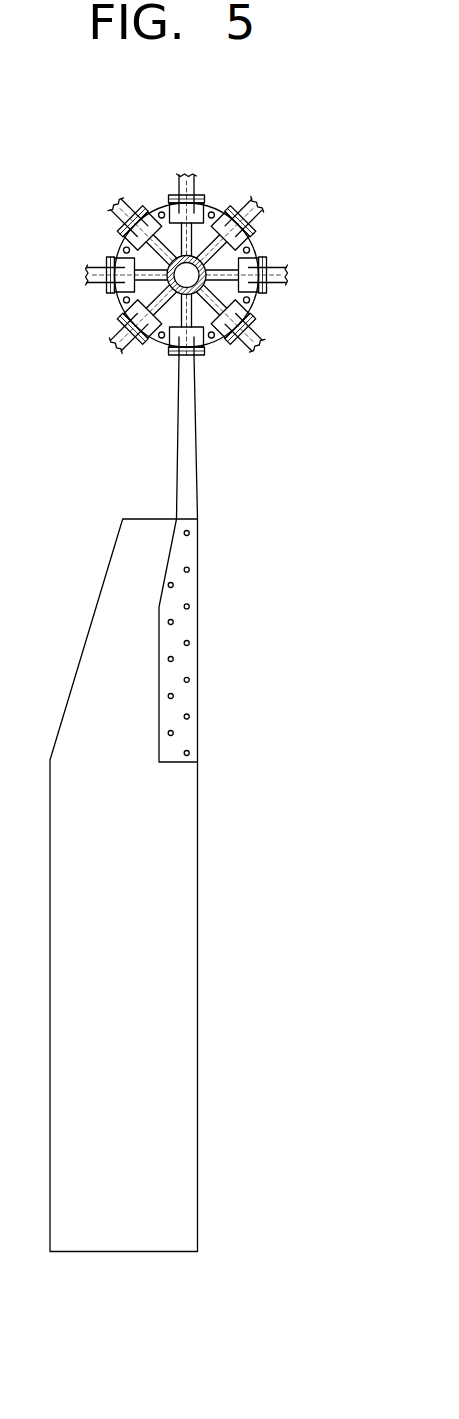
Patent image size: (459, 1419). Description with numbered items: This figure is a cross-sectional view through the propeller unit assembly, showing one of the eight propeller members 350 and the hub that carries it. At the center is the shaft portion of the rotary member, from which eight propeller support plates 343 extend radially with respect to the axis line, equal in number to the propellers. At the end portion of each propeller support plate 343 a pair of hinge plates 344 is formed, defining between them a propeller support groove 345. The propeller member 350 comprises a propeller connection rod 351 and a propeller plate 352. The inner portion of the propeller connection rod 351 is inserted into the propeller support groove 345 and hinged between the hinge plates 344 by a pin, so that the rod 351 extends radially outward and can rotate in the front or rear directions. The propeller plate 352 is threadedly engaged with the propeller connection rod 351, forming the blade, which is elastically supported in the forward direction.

The propeller support plate 343 is at (224, 280).
The hinge plate 344 is at (267, 260).
The propeller support groove 345 is at (257, 203).
The propeller member 350 is at (112, 540).
The propeller connection rod 351 is at (289, 274).
The propeller plate 352 is at (105, 617).